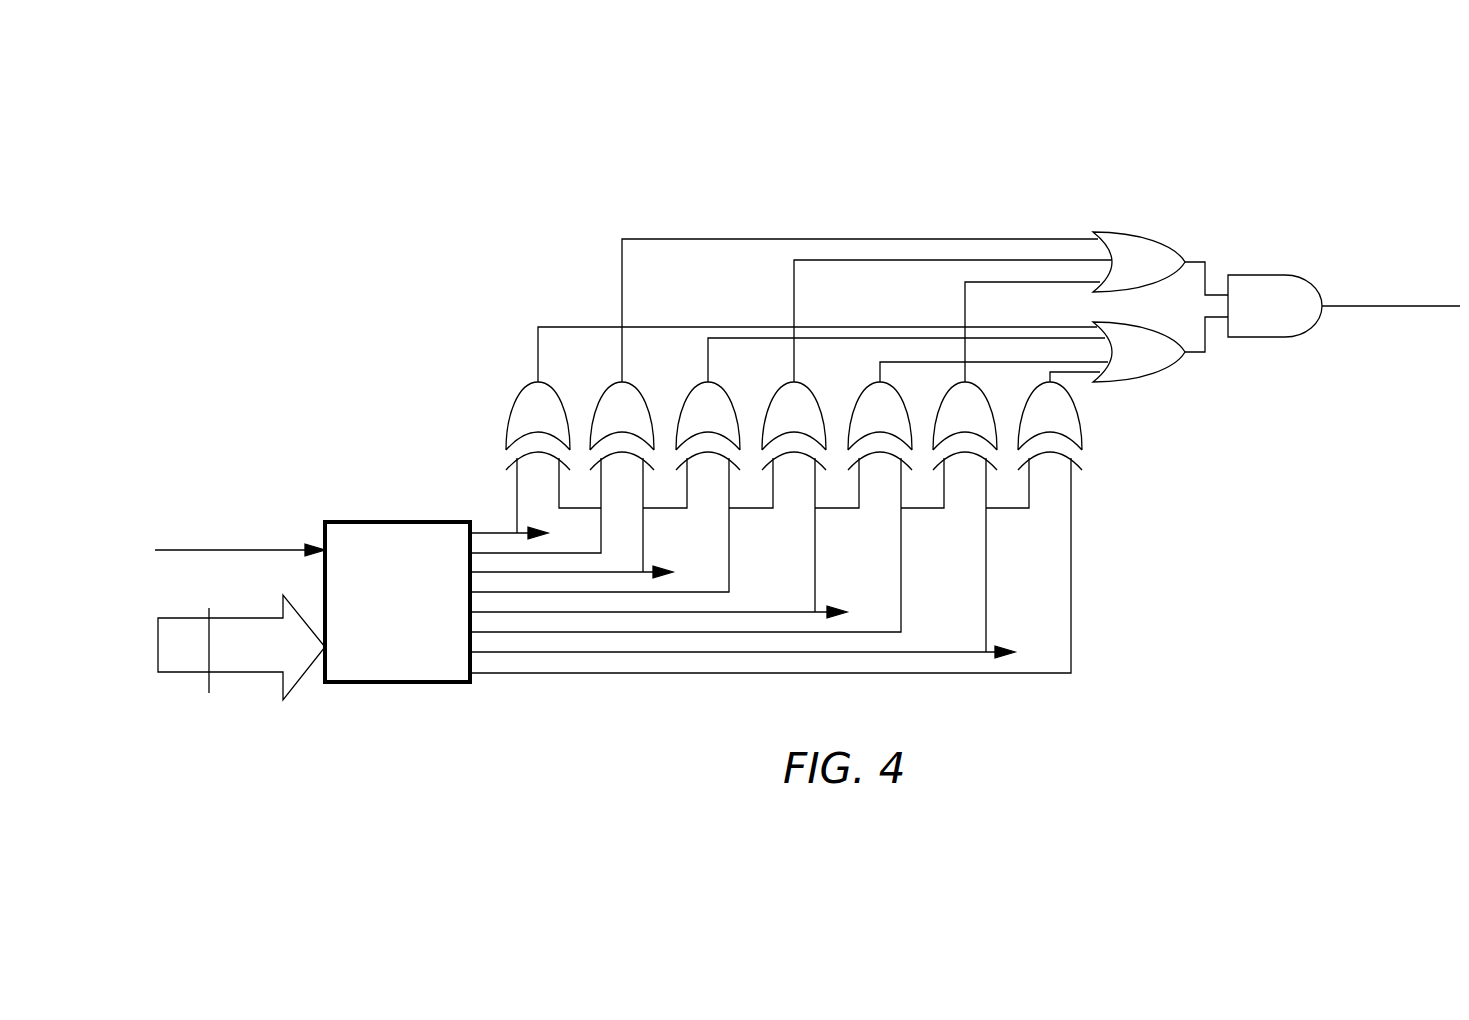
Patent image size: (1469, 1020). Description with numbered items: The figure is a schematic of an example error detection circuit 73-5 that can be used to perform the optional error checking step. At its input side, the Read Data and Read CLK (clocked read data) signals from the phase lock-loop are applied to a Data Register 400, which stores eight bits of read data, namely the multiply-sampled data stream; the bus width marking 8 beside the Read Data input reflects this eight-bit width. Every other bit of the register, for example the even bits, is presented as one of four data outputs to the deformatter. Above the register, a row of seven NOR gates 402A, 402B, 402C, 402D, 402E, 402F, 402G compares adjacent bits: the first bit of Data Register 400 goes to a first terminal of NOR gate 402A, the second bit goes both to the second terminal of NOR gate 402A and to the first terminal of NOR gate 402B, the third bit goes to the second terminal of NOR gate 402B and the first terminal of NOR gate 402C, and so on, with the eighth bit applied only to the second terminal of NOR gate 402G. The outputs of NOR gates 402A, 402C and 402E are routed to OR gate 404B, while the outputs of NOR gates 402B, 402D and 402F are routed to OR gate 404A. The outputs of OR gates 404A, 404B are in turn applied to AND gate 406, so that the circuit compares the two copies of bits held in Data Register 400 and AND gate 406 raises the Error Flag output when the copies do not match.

The error detection circuit 73-5 is at (318, 271).
The Data Register 400 is at (393, 687).
The NOR gate 402A is at (508, 392).
The NOR gate 402B is at (606, 392).
The NOR gate 402C is at (690, 392).
The NOR gate 402D is at (773, 397).
The NOR gate 402E is at (858, 397).
The NOR gate 402F is at (937, 412).
The NOR gate 402G is at (1080, 433).
The OR gate 404A is at (1145, 240).
The OR gate 404B is at (1173, 372).
The AND gate 406 is at (1262, 282).
The 8-bit read data bus 8 is at (207, 663).